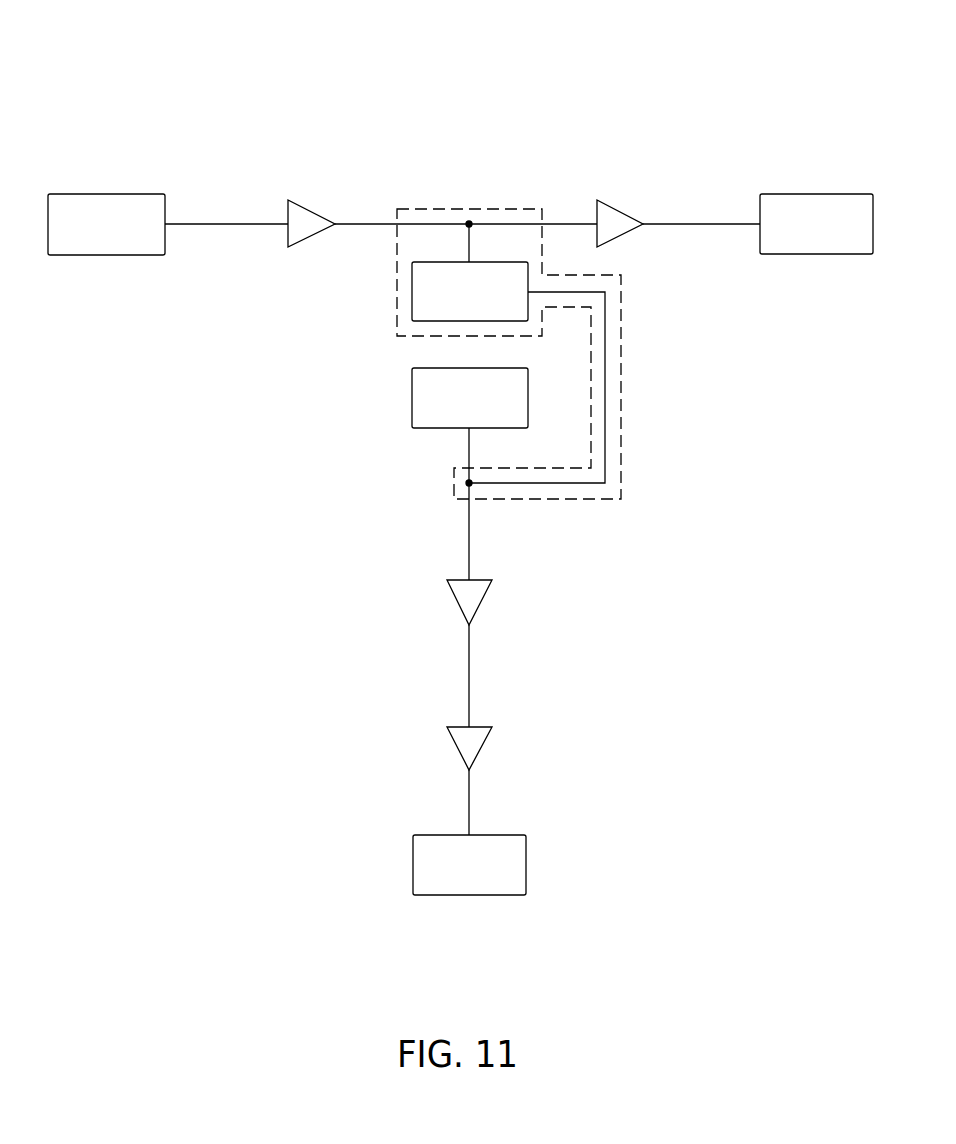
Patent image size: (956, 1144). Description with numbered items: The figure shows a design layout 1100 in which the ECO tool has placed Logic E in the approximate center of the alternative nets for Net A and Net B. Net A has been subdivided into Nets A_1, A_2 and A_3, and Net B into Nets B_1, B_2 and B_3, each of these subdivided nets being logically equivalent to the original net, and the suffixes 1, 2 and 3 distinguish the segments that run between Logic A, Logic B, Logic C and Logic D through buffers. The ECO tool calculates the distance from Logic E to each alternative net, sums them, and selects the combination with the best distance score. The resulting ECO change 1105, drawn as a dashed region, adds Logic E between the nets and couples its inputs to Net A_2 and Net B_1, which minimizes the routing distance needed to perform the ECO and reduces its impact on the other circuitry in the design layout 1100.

The design layout 1100 is at (460, 457).
The ECO change 1105 is at (621, 455).
The net segment 1 (NET A_1 / NET B_1) 1 is at (222, 222).
The net segment 2 (NET A_2 / NET B_2) 2 is at (348, 222).
The net segment 3 (NET A_3 / NET B_3) 3 is at (688, 222).